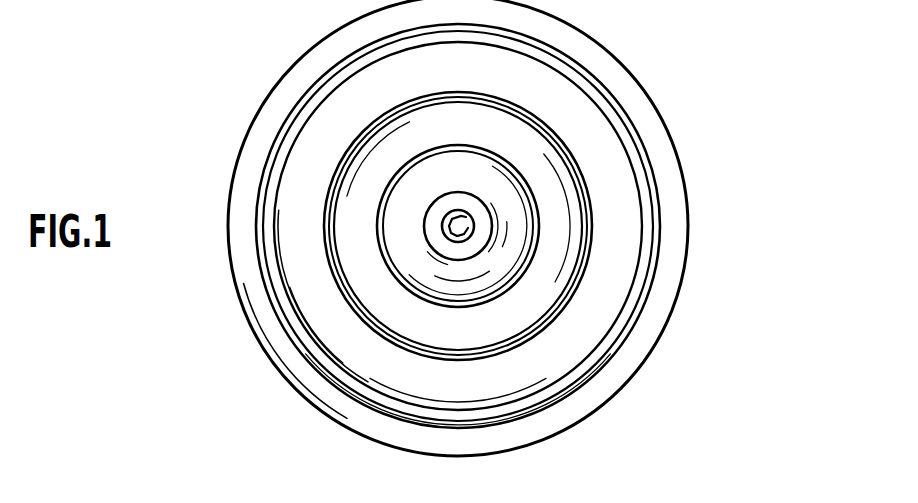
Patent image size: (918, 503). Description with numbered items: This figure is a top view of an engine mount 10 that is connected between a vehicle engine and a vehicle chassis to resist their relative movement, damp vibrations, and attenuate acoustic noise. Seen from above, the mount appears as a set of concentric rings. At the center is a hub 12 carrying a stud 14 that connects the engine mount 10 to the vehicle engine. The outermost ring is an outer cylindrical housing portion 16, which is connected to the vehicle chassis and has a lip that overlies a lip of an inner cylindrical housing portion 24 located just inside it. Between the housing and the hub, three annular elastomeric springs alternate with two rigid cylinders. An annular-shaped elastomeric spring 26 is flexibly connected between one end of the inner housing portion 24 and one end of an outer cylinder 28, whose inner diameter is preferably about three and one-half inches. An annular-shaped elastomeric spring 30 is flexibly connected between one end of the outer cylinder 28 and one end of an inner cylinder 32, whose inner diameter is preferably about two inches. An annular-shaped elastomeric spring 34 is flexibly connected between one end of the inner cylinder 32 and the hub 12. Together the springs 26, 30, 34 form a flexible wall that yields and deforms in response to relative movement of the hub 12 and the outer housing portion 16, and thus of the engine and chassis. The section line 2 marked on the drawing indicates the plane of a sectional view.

The engine mount 10 is at (217, 82).
The hub 12 is at (458, 250).
The stud 14 is at (470, 222).
The outer cylindrical housing portion 16 is at (618, 372).
The inner cylindrical housing portion 24 is at (642, 295).
The annular-shaped elastomeric spring 26 is at (620, 175).
The outer cylinder 28 is at (580, 167).
The annular-shaped elastomeric spring 30 is at (358, 282).
The inner cylinder 32 is at (425, 296).
The annular-shaped elastomeric spring 34 is at (398, 230).
The section line 2- 2 is at (210, 225).